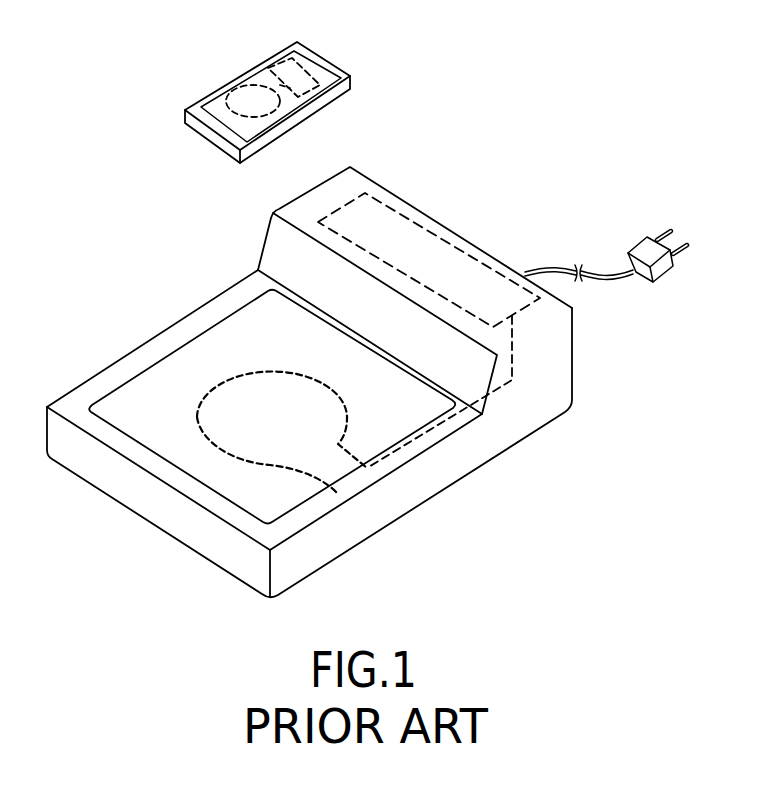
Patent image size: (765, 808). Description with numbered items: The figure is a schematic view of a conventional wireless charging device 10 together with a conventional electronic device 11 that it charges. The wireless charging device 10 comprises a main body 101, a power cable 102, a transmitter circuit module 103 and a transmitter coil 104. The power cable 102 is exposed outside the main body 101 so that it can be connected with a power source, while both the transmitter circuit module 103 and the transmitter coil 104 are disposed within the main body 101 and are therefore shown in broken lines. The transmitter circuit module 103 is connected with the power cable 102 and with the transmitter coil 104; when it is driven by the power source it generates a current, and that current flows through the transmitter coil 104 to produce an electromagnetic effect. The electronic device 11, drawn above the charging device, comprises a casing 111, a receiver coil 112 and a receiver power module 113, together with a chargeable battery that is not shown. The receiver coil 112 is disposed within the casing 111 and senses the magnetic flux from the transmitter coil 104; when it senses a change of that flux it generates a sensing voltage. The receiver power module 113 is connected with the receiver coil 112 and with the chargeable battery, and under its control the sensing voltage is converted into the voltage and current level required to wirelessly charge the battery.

The wireless charging device 10 is at (195, 291).
The electronic device 11 is at (256, 97).
The main body 101 is at (127, 367).
The power cable 102 is at (625, 282).
The transmitter circuit module 103 is at (435, 240).
The transmitter coil 104 is at (207, 442).
The casing 111 is at (197, 100).
The receiver coil 112 is at (283, 107).
The receiver power module 113 is at (307, 75).